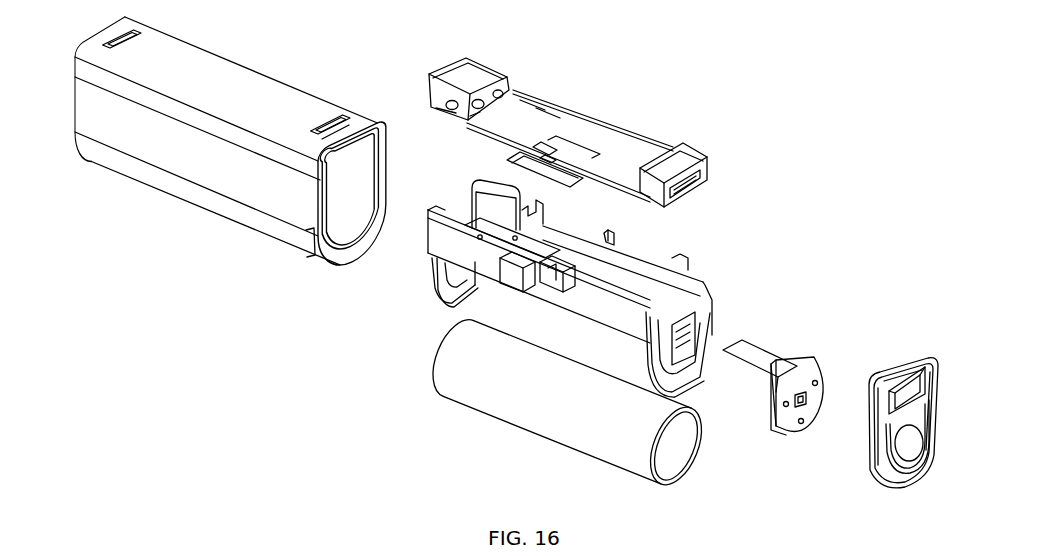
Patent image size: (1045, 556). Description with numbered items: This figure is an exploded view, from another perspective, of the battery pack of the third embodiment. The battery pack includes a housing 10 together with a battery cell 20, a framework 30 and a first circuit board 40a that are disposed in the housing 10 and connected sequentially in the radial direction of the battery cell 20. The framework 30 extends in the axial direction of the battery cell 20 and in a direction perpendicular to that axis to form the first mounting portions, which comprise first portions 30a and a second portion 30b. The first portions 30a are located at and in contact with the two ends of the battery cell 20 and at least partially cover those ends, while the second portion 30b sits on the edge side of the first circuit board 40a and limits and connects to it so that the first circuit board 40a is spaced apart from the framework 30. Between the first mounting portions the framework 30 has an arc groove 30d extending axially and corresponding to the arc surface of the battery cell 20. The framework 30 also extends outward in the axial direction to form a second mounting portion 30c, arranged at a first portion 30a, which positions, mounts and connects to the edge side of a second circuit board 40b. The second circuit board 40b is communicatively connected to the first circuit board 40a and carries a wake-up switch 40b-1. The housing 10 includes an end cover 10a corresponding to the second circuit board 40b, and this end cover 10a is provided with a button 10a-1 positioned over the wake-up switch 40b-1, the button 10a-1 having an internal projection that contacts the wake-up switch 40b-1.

The housing 10 is at (205, 210).
The end cover 10a is at (930, 391).
The button 10a-1 is at (911, 446).
The battery cell 20 is at (553, 443).
The framework 30 is at (628, 255).
The first portion 30a is at (452, 298).
The second portion 30b is at (609, 237).
The second mounting portion 30c is at (712, 328).
The arc groove 30d is at (567, 300).
The first circuit board 40a is at (580, 113).
The second circuit board 40b is at (822, 362).
The wake-up switch 40b-1 is at (813, 413).